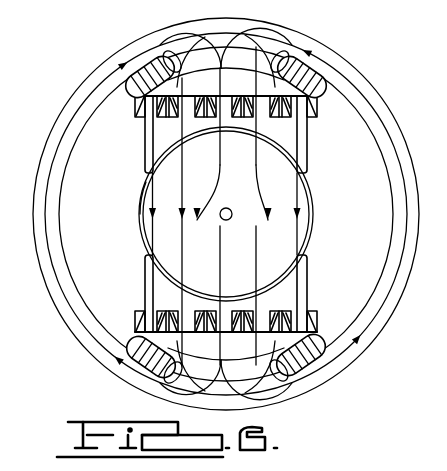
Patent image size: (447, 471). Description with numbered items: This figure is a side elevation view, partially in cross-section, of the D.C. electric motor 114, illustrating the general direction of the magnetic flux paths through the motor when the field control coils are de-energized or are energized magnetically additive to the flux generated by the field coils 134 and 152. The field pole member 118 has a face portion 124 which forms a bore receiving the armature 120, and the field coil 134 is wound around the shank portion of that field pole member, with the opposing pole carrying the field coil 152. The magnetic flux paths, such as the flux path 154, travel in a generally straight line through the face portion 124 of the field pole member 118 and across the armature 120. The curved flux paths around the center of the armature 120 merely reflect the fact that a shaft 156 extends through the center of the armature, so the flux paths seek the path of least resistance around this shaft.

The D.C. electric motor 114 is at (69, 65).
The field pole member 118 is at (314, 155).
The armature 120 is at (312, 212).
The face portion 124 is at (145, 156).
The field coil 134 is at (125, 99).
The field coil 152 is at (128, 333).
The flux path 154 is at (147, 184).
The shaft axis 156 is at (227, 208).